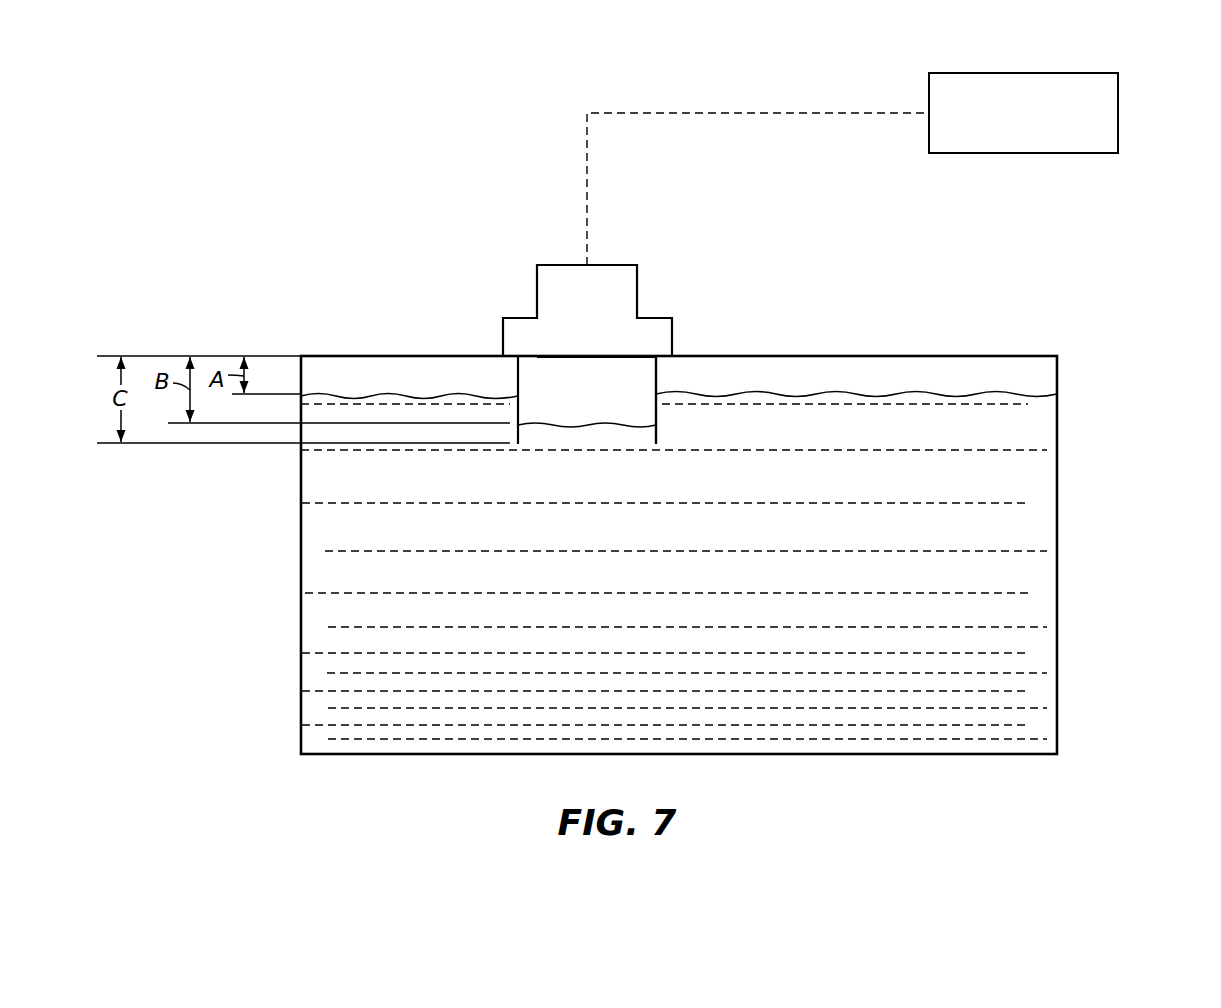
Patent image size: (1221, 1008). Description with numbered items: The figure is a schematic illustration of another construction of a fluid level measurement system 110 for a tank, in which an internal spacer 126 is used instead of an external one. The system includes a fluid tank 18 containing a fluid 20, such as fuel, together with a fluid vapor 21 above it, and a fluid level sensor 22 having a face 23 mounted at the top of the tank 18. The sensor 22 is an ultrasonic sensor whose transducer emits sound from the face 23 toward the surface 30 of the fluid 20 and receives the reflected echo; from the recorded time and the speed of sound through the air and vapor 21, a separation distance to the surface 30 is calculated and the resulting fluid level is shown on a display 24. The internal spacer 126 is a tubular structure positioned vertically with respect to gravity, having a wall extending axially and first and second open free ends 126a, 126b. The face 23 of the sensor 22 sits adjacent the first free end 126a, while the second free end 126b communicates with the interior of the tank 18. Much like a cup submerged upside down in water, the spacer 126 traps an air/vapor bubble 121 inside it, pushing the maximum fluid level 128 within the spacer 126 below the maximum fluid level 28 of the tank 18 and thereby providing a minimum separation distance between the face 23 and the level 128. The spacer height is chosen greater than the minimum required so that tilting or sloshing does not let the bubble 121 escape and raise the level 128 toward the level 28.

The fluid tank 18 is at (1057, 473).
The fluid 20 is at (365, 577).
The fluid vapor 21 is at (908, 375).
The fluid level sensor 22 is at (615, 263).
The face 23 is at (597, 358).
The display 24 is at (1118, 112).
The maximum fluid level 28 is at (1013, 385).
The surface 30 is at (600, 422).
The fluid level measurement system 110 is at (414, 192).
The air/vapor bubble 121 is at (535, 372).
The internal spacer 126 is at (517, 415).
The first open free end 126a is at (662, 360).
The second open free end 126b is at (664, 440).
The maximum fluid level 128 is at (547, 422).